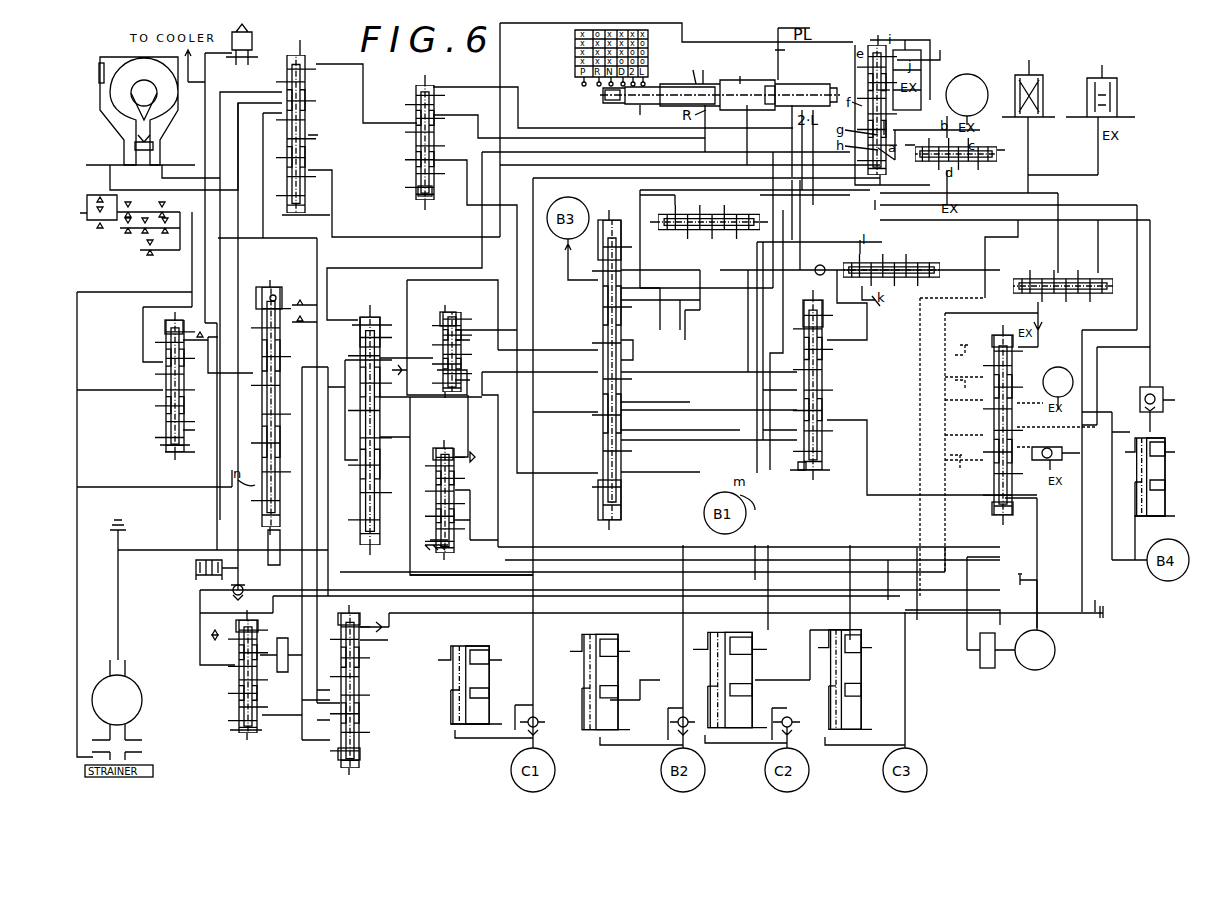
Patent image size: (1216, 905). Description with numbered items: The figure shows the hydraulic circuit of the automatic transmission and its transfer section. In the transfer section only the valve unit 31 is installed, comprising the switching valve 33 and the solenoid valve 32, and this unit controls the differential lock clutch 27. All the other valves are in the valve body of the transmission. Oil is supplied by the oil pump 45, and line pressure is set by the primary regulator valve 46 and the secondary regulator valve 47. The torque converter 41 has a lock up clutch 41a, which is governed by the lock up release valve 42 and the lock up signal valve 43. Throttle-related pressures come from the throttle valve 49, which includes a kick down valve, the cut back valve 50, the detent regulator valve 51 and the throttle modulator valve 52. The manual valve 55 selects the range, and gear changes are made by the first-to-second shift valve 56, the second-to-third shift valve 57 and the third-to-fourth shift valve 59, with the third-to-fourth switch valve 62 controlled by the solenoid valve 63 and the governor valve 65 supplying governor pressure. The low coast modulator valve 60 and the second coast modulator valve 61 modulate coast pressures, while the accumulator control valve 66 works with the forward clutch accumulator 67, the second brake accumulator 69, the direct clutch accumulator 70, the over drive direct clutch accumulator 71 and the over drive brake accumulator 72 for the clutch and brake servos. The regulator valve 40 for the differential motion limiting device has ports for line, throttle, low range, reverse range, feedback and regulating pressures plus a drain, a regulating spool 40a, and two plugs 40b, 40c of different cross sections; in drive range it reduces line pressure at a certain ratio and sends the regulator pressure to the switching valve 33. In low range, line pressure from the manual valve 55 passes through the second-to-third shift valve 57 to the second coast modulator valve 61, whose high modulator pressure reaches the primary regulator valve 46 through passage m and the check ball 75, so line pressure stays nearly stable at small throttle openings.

The differential lock clutch 27 is at (968, 75).
The valve unit 31 is at (988, 78).
The solenoid valve 32 is at (1118, 100).
The switching valve 33 is at (972, 126).
The regulator valve 40 is at (868, 44).
The regulating spool 40a is at (873, 81).
The first plug 40b is at (890, 125).
The second plug 40c is at (872, 211).
The torque converter 41 is at (114, 52).
The lock up clutch 41a is at (99, 73).
The lock up release valve 42 is at (295, 58).
The lock up signal valve 43 is at (428, 86).
The oil pump 45 is at (138, 676).
The primary regulator valve 46 is at (288, 292).
The secondary regulator valve 47 is at (186, 336).
The throttle valve 49 is at (384, 324).
The cut back valve 50 is at (455, 320).
The detent regulator valve 51 is at (450, 455).
The throttle modulator valve 52 is at (258, 650).
The manual valve 55 is at (712, 78).
The 1-2 shift valve 56 is at (622, 232).
The 2-3 shift valve 57 is at (828, 345).
The 3-4 shift valve 59 is at (980, 352).
The low coast modulator valve 60 is at (732, 230).
The second coast modulator valve 61 is at (895, 262).
The 3-4 switch valve 62 is at (1098, 278).
The solenoid valve 63 is at (1043, 100).
The governor valve 65 is at (1058, 657).
The accumulator control valve 66 is at (368, 690).
The C1 accumulator 67 is at (508, 650).
The B2 accumulator 69 is at (628, 656).
The C2 accumulator 70 is at (748, 652).
The C3 accumulator 71 is at (870, 650).
The B4 accumulator 72 is at (1165, 442).
The check ball 75 is at (243, 586).